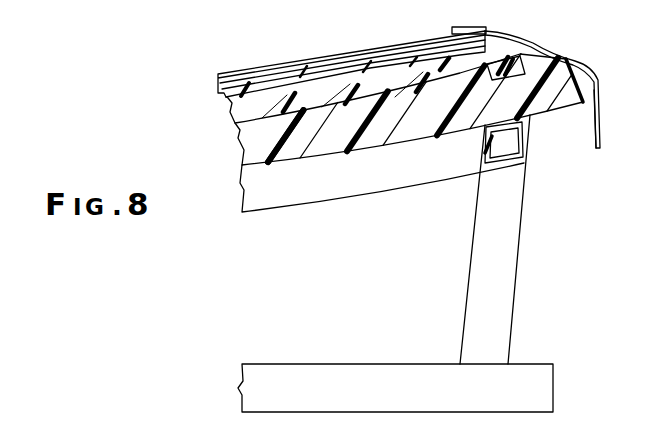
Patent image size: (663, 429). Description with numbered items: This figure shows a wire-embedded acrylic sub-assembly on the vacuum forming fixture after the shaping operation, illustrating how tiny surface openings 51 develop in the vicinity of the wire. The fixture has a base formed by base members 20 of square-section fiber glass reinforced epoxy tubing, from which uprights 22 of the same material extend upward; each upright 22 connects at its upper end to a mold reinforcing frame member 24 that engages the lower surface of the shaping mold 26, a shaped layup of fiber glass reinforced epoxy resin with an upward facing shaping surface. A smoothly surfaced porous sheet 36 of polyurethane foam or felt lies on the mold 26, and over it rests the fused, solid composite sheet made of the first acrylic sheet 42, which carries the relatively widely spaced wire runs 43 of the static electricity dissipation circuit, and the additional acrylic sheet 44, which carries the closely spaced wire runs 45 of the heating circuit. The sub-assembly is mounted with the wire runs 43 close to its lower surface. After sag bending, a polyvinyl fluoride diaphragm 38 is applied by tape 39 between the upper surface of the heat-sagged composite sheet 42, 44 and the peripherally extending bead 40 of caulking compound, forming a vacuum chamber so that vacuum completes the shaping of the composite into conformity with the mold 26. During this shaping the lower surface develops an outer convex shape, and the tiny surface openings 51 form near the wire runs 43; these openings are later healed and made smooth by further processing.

The base member 20 is at (345, 366).
The upright 22 is at (470, 303).
The mold reinforcing frame member 24 is at (488, 164).
The shaping mold 26 is at (244, 152).
The porous sheet 36 is at (228, 113).
The diaphragm 38 is at (543, 50).
The tape 39 is at (472, 30).
The bead 40 is at (587, 87).
The first sheet of acrylic plastic resin 42 is at (220, 92).
The wire runs 43 is at (258, 98).
The additional sheet of transparent acrylic plastic resin 44 is at (217, 79).
The wire runs 45 is at (317, 72).
The surface openings 51 is at (258, 98).